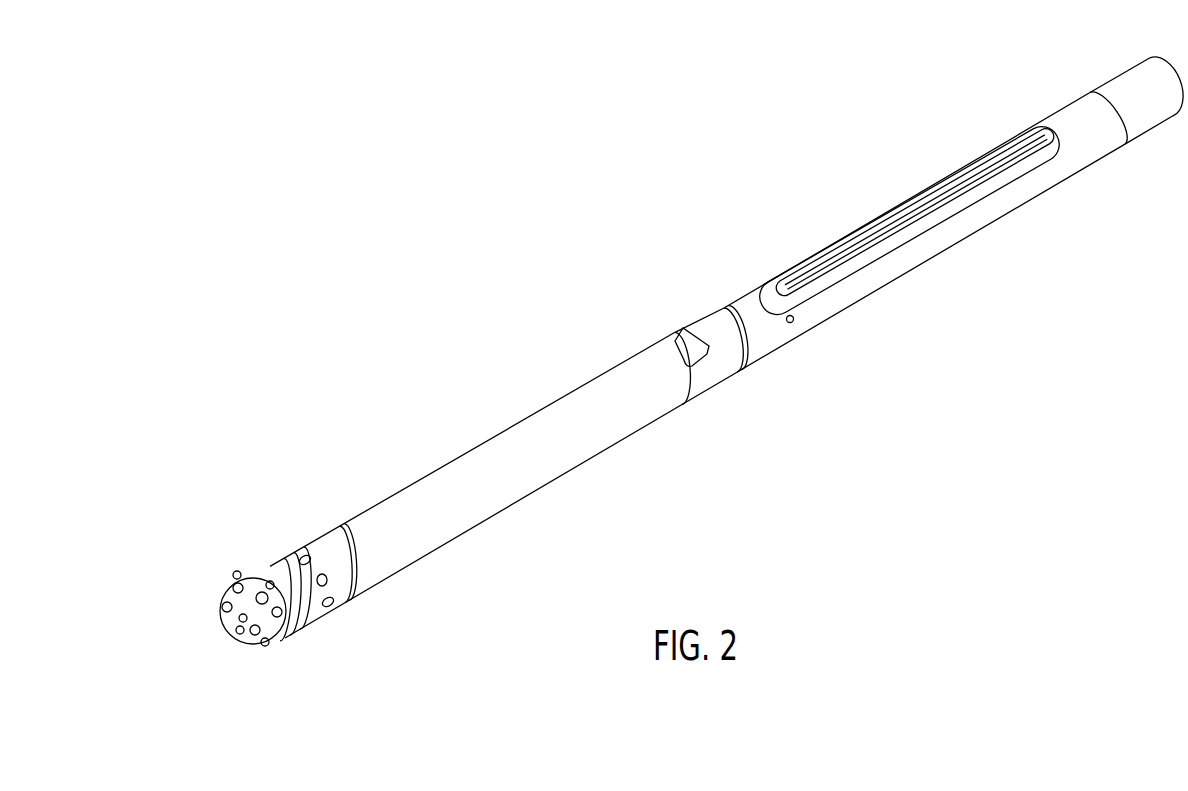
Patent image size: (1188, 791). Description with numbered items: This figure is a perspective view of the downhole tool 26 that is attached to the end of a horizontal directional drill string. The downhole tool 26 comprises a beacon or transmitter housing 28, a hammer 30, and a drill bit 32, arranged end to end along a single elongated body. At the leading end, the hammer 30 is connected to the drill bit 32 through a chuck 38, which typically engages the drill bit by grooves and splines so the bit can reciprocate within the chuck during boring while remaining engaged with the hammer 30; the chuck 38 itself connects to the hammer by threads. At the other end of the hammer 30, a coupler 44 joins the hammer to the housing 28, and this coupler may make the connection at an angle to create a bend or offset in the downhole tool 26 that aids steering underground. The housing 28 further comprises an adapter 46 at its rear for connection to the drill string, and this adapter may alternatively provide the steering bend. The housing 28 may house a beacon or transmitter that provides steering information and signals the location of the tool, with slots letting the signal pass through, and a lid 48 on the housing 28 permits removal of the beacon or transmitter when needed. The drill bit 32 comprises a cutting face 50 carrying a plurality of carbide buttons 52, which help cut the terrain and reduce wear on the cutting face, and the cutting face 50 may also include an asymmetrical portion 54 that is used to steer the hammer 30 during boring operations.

The downhole tool 26 is at (655, 157).
The beacon or transmitter housing 28 is at (1048, 173).
The hammer 30 is at (493, 497).
The drill bit 32 is at (280, 653).
The chuck 38 is at (290, 556).
The coupler 44 is at (703, 375).
The adapter 46 is at (1137, 90).
The lid 48 is at (887, 228).
The cutting face 50 is at (230, 598).
The carbide buttons 52 is at (237, 587).
The asymmetrical portion 54 is at (257, 647).